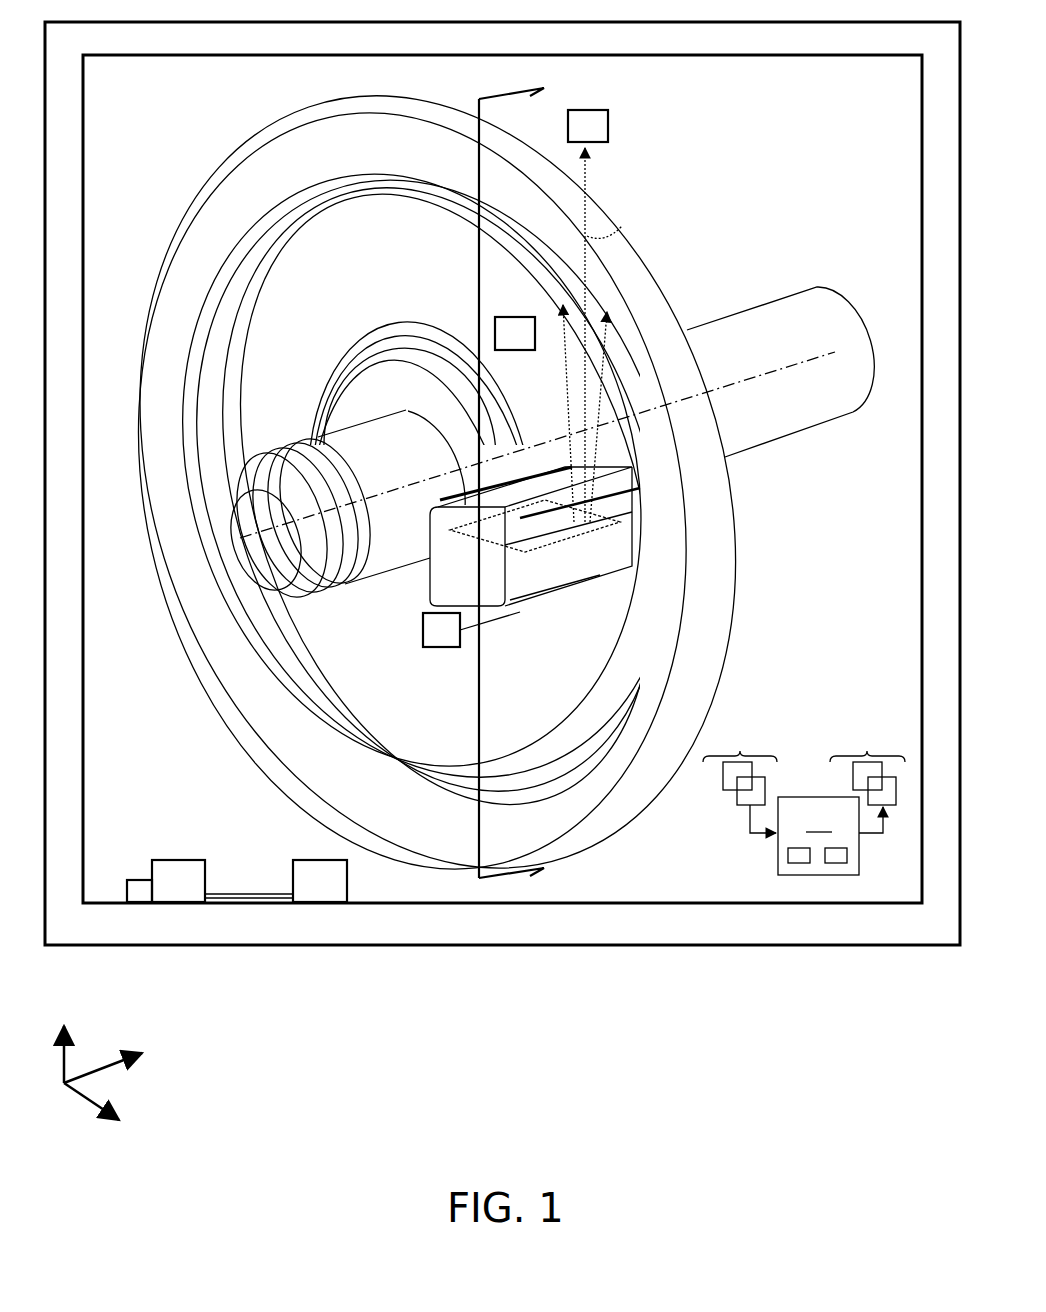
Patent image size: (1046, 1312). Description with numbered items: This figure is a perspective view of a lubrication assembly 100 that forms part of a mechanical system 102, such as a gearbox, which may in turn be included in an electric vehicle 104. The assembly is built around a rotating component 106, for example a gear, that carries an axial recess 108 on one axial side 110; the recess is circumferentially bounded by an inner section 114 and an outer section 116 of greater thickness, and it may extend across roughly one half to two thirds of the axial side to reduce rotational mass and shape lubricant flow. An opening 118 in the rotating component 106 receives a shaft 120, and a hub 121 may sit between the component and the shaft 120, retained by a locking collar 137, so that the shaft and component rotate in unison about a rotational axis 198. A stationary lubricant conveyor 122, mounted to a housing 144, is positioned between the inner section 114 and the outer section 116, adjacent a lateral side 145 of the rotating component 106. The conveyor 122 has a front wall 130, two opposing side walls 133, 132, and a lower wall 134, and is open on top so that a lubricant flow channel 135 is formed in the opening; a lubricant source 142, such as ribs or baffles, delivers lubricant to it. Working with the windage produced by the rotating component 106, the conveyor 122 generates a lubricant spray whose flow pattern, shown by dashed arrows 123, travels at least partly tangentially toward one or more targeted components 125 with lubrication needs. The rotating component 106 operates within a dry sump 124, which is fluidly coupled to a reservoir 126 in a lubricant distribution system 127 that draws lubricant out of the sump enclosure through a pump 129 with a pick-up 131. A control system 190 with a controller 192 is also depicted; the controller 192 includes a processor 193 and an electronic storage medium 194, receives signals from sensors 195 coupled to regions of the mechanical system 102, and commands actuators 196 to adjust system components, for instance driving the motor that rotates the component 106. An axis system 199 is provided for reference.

The lubrication assembly 100 is at (128, 126).
The mechanical system 102 is at (85, 58).
The electric vehicle 104 is at (45, 24).
The rotating component 106 is at (665, 826).
The axial recess 108 is at (450, 708).
The axial side 110 is at (200, 598).
The inner section 114 is at (385, 380).
The outer section 116 is at (198, 238).
The opening 118 is at (413, 414).
The shaft 120 is at (752, 326).
The hub 121 is at (355, 405).
The lubricant conveyor 122 is at (420, 545).
The dashed arrows 123 is at (626, 233).
The dry sump 124 is at (122, 850).
The targeted component 125 is at (608, 126).
The reservoir 126 is at (318, 860).
The lubricant distribution system 127 is at (122, 782).
The pump 129 is at (183, 860).
The front wall 130 is at (450, 563).
The pick-up 131 is at (140, 880).
The side wall 132 is at (543, 556).
The side wall 133 is at (456, 494).
The lower wall 134 is at (551, 608).
The lubricant flow channel 135 is at (541, 500).
The locking collar 137 is at (293, 450).
The lubricant source 142 is at (505, 317).
The housing 144 is at (423, 632).
The lateral side 145 is at (652, 556).
The control system 190 is at (802, 738).
The controller 192 is at (818, 836).
The processor 193 is at (788, 857).
The electronic storage medium 194 is at (847, 857).
The sensors 195 is at (740, 782).
The actuators 196 is at (867, 782).
The rotational axis 198 is at (269, 544).
The axis system 199 is at (148, 1004).